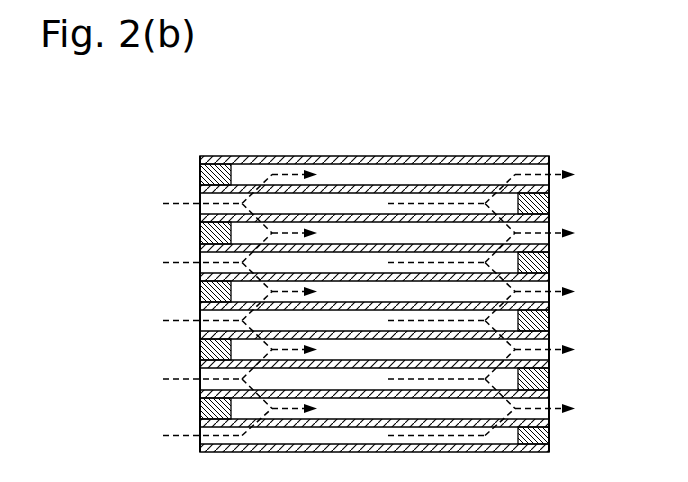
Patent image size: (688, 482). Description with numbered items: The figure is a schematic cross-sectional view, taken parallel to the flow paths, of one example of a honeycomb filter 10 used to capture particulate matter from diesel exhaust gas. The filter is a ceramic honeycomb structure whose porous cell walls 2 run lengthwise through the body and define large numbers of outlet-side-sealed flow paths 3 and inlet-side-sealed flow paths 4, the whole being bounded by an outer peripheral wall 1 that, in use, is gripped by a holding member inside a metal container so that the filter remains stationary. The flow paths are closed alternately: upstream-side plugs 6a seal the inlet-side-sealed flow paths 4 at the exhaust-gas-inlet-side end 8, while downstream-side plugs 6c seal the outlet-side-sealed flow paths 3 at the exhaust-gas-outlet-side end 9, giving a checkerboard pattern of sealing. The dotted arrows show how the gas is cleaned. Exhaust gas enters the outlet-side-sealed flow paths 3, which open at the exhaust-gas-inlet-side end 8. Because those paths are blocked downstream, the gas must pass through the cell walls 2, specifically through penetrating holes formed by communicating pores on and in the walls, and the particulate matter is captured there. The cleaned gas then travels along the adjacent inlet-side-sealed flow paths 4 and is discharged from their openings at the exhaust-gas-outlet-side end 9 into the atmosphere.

The honeycomb filter 10 is at (203, 122).
The outer peripheral wall 1 is at (265, 165).
The porous cell walls 2 is at (447, 187).
The outlet-side-sealed flow paths 3 is at (330, 200).
The inlet-side-sealed flow paths 4 is at (383, 235).
The upstream-side plugs 6a is at (210, 230).
The downstream-side plugs 6c is at (549, 258).
The exhaust-gas-inlet-side end 8 is at (200, 308).
The exhaust-gas-outlet-side end 9 is at (549, 297).